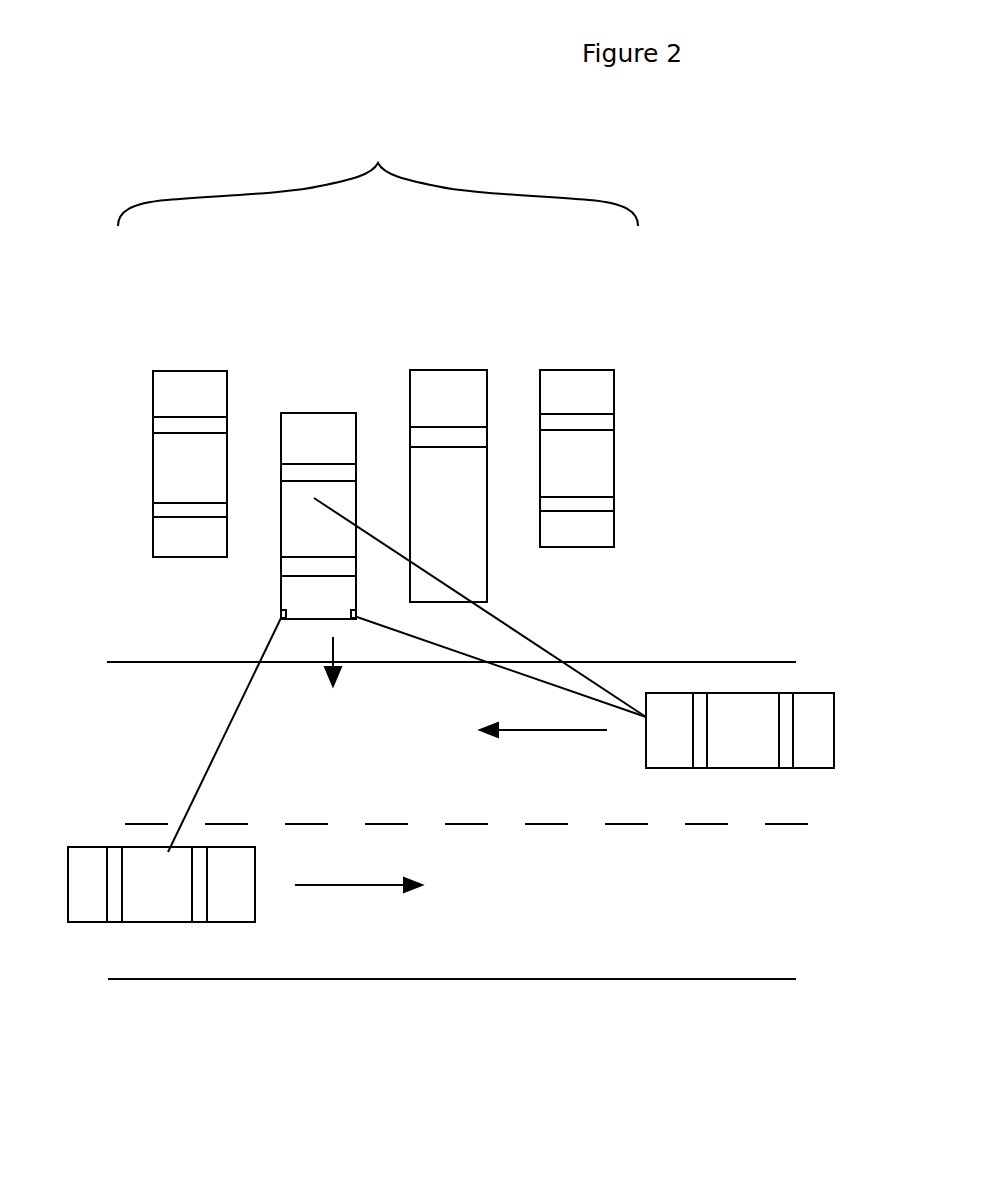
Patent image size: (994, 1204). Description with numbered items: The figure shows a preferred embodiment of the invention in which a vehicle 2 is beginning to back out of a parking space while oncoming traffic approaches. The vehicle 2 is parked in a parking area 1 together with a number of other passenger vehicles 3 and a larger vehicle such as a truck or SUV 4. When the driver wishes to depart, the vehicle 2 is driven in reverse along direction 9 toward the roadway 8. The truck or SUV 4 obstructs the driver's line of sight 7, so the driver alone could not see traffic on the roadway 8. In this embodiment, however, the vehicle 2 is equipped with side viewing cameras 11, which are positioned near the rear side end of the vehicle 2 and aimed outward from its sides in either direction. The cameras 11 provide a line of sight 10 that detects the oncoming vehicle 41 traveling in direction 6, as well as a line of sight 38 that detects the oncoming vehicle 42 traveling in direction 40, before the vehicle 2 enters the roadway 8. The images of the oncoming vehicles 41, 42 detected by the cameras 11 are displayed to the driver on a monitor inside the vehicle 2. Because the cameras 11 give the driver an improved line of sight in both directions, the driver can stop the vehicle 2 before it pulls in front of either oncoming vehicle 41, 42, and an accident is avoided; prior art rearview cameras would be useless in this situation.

The parking area 1 is at (378, 160).
The vehicle 2 is at (332, 430).
The passenger vehicles 3 is at (580, 370).
The truck or SUV 4 is at (410, 396).
The direction 6 is at (528, 732).
The driver's line of sight 7 is at (520, 633).
The roadway 8 is at (253, 981).
The direction 9 is at (333, 642).
The line of sight 10 is at (512, 669).
The side viewing cameras 11 is at (356, 607).
The line of sight 38 is at (202, 773).
The direction 40 is at (370, 888).
The oncoming vehicle 41 is at (753, 764).
The oncoming vehicle 42 is at (177, 902).